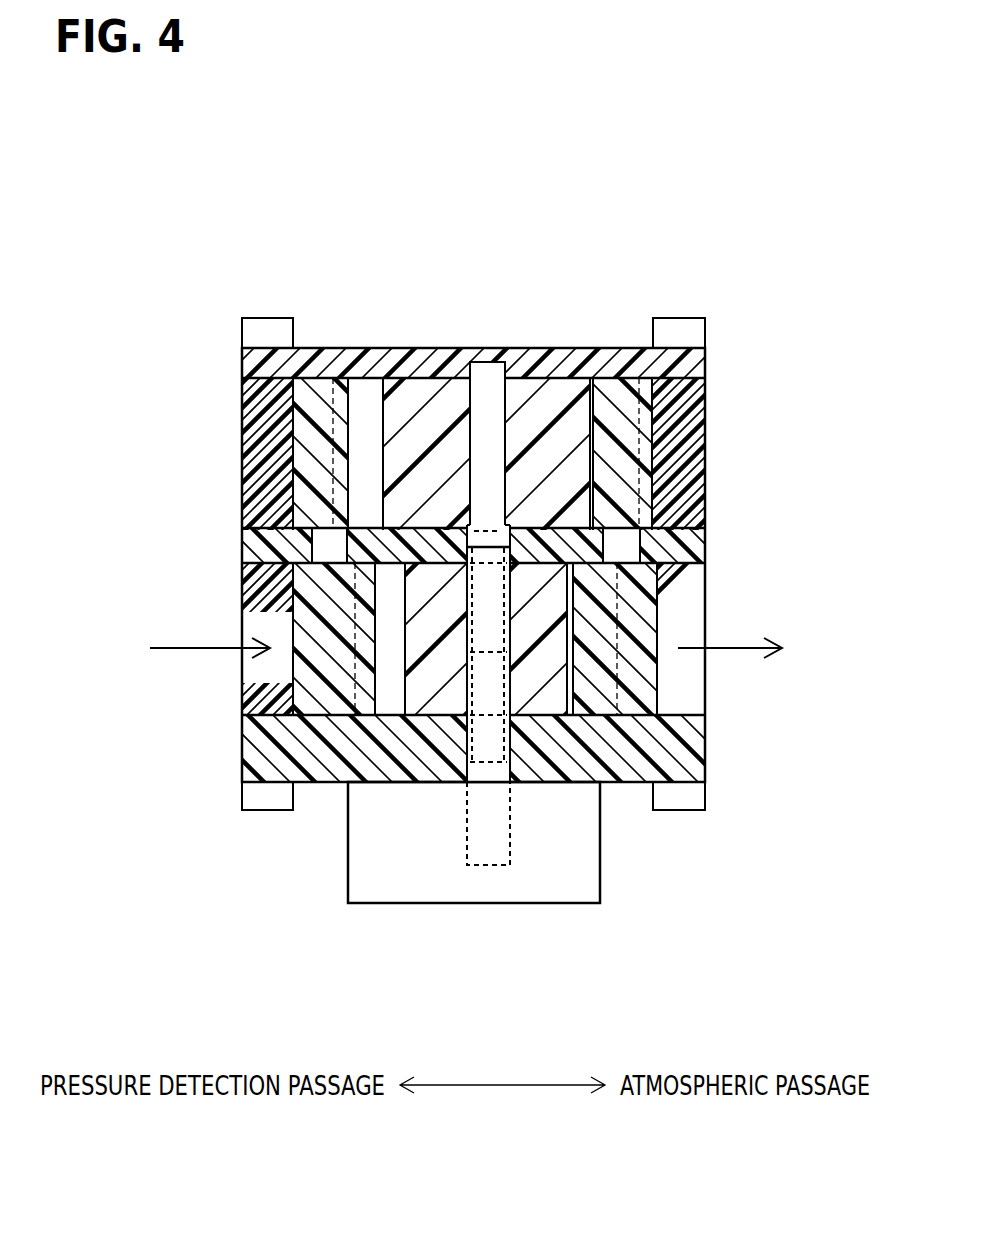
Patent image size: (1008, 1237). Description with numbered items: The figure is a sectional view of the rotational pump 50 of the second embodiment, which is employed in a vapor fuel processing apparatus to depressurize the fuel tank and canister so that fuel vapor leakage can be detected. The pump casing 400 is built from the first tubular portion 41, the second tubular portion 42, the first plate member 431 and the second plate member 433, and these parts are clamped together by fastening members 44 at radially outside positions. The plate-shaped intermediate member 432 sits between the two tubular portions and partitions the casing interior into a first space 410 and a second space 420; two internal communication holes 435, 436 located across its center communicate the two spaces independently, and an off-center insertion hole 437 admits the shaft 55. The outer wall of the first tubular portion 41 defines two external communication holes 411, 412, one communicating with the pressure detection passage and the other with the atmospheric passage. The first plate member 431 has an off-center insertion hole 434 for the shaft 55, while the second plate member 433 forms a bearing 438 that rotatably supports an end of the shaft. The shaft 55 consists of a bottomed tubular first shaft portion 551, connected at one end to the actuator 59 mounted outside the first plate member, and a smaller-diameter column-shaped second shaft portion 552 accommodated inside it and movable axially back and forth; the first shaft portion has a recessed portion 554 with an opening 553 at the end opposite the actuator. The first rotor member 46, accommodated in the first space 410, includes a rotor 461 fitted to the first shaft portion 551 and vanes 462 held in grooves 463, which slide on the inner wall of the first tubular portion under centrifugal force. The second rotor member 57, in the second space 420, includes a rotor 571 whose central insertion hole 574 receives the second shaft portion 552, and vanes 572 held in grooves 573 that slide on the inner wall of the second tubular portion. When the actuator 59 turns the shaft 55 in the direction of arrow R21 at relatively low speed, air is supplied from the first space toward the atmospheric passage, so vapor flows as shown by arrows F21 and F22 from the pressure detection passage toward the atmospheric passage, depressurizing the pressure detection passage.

The rotational pump 50 is at (707, 275).
The pump casing 400 is at (236, 422).
The second plate member 433 is at (252, 366).
The fastening members 44 is at (266, 327).
The second tubular portion 42 is at (250, 463).
The second space 420 is at (302, 497).
The intermediate member 432 is at (262, 547).
The internal communication hole 435 is at (318, 570).
The internal communication hole 436 is at (630, 572).
The first tubular portion 41 is at (270, 598).
The external communication hole 411 is at (262, 620).
The external communication hole 412 is at (672, 628).
The first space 410 is at (290, 706).
The first plate member 431 is at (258, 762).
The first rotor member 46 is at (383, 740).
The vanes 462 is at (322, 782).
The grooves 463 is at (403, 735).
The insertion hole 434 is at (489, 660).
The arrow R21 is at (508, 690).
The rotor 461 is at (536, 627).
The actuator 59 is at (365, 905).
The shaft 55 is at (460, 598).
The first shaft portion 551 is at (650, 708).
The second shaft portion 552 is at (507, 526).
The opening 553 is at (505, 540).
The recessed portion 554 is at (505, 548).
The second rotor member 57 is at (572, 365).
The rotor 571 is at (420, 395).
The vanes 572 is at (315, 405).
The grooves 573 is at (368, 400).
The insertion hole 574 is at (477, 360).
The insertion hole 437 is at (472, 425).
The bearing 438 is at (488, 425).
The arrow F21 is at (185, 651).
The arrow F22 is at (772, 652).